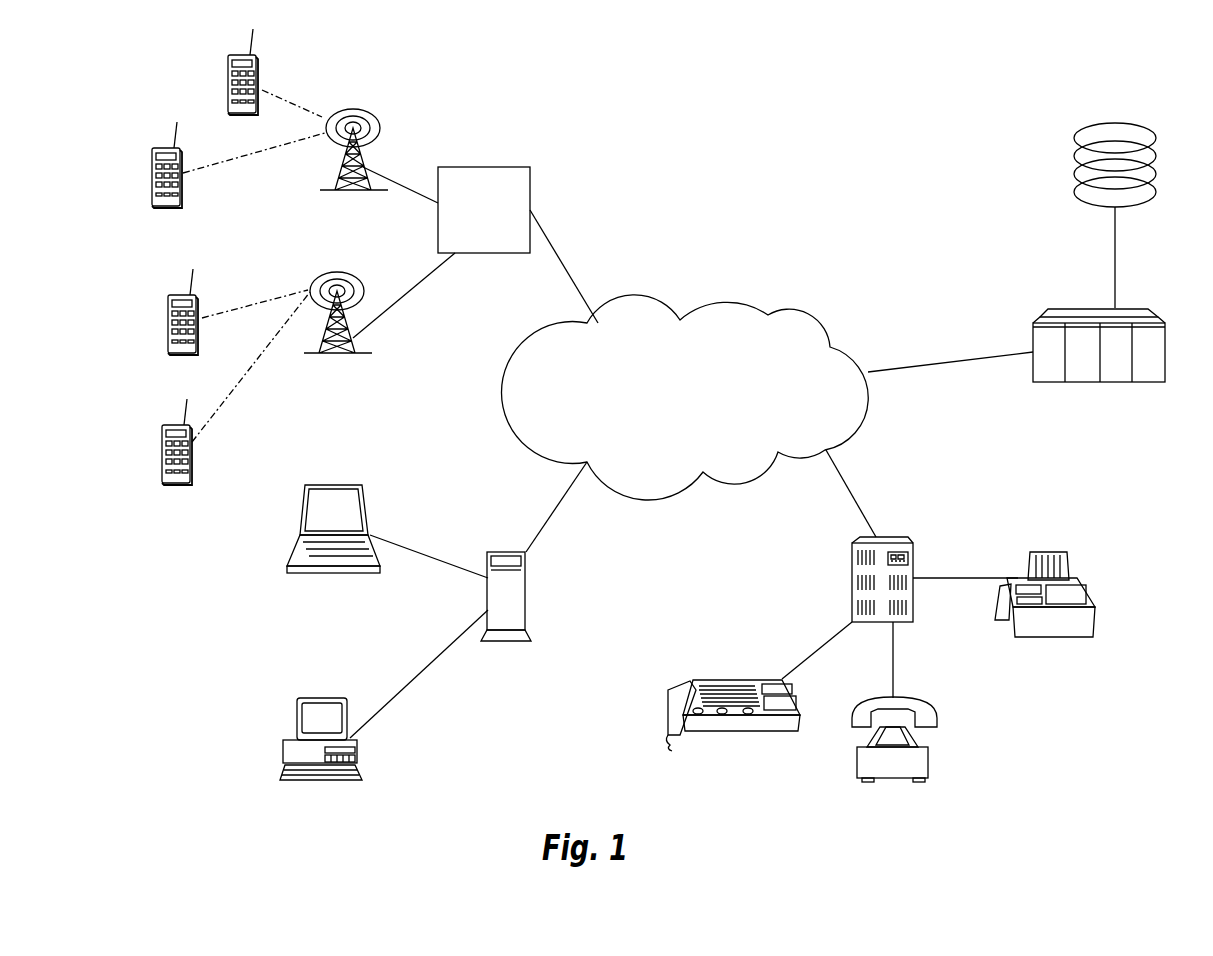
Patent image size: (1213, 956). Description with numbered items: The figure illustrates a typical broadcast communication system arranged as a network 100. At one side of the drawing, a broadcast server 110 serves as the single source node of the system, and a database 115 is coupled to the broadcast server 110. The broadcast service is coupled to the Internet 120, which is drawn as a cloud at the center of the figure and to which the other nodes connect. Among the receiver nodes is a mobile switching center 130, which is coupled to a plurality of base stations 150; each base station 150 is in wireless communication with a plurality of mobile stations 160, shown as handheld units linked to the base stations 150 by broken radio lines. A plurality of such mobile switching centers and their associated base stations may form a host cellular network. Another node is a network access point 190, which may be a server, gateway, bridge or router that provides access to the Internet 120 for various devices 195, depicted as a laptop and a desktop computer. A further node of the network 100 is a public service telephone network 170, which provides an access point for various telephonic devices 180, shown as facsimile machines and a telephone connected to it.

The network 100 is at (773, 243).
The broadcast server 110 is at (1123, 373).
The database 115 is at (1135, 148).
The Internet 120 is at (720, 407).
The mobile switching center 130 is at (484, 210).
The base station 150 is at (373, 193).
The mobile station 160 is at (228, 98).
The public service telephone network 170 is at (913, 545).
The telephonic device 180 is at (733, 680).
The network access point 190 is at (515, 641).
The device 195 is at (355, 570).